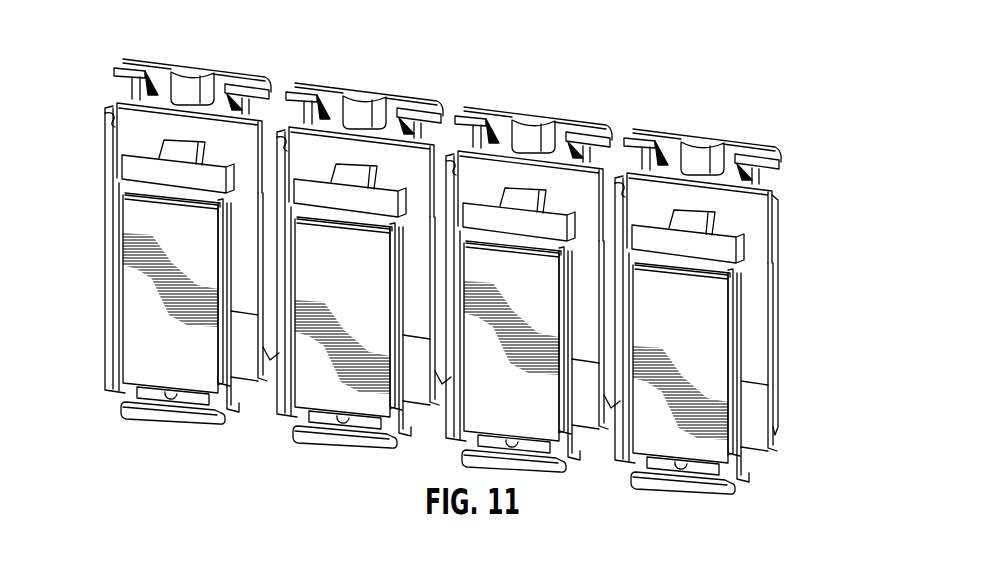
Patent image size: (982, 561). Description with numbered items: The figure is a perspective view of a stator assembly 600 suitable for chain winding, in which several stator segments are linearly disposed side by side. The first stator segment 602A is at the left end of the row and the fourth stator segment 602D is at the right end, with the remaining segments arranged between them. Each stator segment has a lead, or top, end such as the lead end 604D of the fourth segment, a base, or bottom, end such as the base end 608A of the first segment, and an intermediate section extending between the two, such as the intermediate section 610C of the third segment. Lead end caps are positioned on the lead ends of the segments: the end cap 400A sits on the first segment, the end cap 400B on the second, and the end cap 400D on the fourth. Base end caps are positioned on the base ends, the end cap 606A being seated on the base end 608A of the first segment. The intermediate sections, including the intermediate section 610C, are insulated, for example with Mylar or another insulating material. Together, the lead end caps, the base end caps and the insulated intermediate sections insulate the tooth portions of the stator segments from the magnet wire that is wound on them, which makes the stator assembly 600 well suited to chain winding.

The stator assembly 600 is at (450, 276).
The end cap 400A is at (130, 128).
The end cap 400B is at (410, 163).
The end cap 400D is at (743, 217).
The stator segment 602A is at (157, 365).
The stator segment 602D is at (695, 378).
The lead end 604D is at (717, 290).
The end cap 606A is at (185, 417).
The base end 608A is at (208, 375).
The intermediate section 610C is at (583, 310).